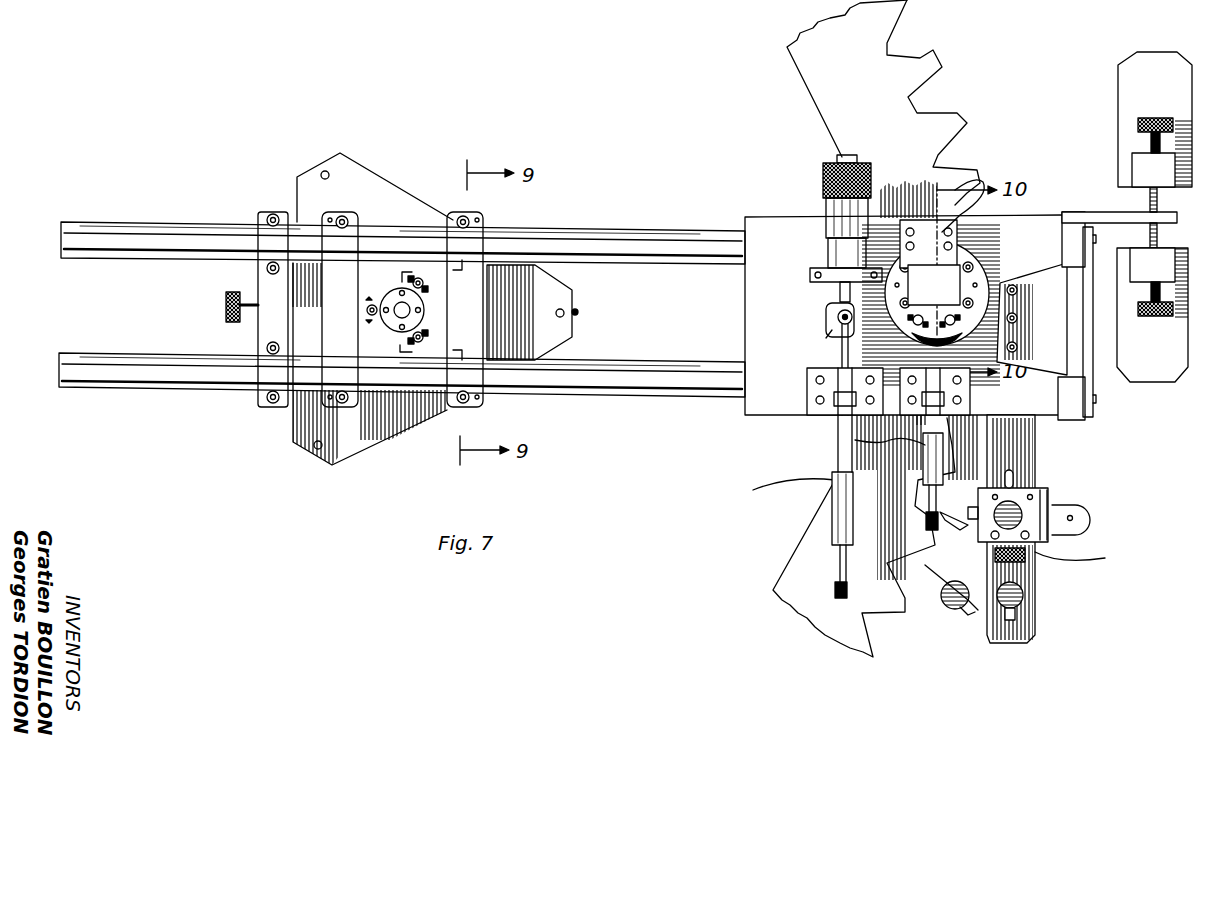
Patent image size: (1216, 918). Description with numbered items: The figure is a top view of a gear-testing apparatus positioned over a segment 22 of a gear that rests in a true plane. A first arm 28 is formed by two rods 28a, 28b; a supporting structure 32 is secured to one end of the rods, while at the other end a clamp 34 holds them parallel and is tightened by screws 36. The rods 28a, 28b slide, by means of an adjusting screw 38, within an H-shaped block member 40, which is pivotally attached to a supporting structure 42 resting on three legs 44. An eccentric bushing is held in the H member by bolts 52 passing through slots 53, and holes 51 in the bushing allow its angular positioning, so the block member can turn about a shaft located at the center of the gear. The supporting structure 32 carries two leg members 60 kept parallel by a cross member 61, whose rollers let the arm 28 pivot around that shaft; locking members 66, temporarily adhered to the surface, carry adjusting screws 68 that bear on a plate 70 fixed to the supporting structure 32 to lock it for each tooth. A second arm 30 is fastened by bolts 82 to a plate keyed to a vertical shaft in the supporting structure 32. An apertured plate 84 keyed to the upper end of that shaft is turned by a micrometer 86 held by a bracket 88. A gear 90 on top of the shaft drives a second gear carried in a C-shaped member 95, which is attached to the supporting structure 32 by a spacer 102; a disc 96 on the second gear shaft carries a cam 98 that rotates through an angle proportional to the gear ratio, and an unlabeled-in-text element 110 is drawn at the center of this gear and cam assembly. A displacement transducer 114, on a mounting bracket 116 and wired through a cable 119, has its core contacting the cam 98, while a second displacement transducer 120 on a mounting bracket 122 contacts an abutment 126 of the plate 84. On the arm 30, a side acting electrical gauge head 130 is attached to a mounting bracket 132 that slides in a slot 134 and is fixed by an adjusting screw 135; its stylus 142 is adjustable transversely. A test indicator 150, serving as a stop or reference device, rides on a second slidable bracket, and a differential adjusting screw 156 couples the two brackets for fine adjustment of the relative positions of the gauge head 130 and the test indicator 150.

The segment of a gear 22 is at (920, 55).
The first arm 28 is at (628, 232).
The rod 28a is at (150, 240).
The rod 28b is at (140, 365).
The second arm 30 is at (1030, 440).
The supporting structure 32 is at (757, 397).
The clamp 34 is at (272, 372).
The screws 36 is at (273, 213).
The adjusting screw 38 is at (226, 303).
The H-shaped block member 40 is at (475, 240).
The supporting structure 42 is at (383, 185).
The legs 44 is at (582, 313).
The holes 51 is at (390, 295).
The bolts 52 is at (426, 284).
The slots 53 is at (426, 338).
The leg members 60 is at (1074, 214).
The cross member 61 is at (1088, 320).
The locking members 66 is at (1152, 55).
The adjusting screws 68 is at (1155, 118).
The plate 70 is at (1165, 215).
The bolts 82 is at (1018, 291).
The second apertured plate 84 is at (835, 318).
The micrometer 86 is at (830, 205).
The bracket 88 is at (835, 283).
The gear 90 is at (910, 332).
The C-shaped member 95 is at (945, 225).
The disc 96 is at (960, 265).
The cam 98 is at (990, 283).
The spacer 102 is at (893, 205).
The window 110 is at (948, 283).
The displacement transducer 114 is at (945, 465).
The mounting bracket 116 is at (970, 398).
The cable 119 is at (855, 445).
The displacement transducer 120 is at (840, 510).
The mounting bracket 122 is at (843, 408).
The abutment 126 is at (830, 330).
The side acting electrical gauge head 130 is at (1075, 528).
The mounting bracket 132 is at (1040, 500).
The slot 134 is at (1013, 480).
The adjusting screw 135 is at (1017, 515).
The stylus 142 is at (951, 561).
The measuring apparatus 150 is at (955, 608).
The differential adjusting screw 156 is at (1037, 555).